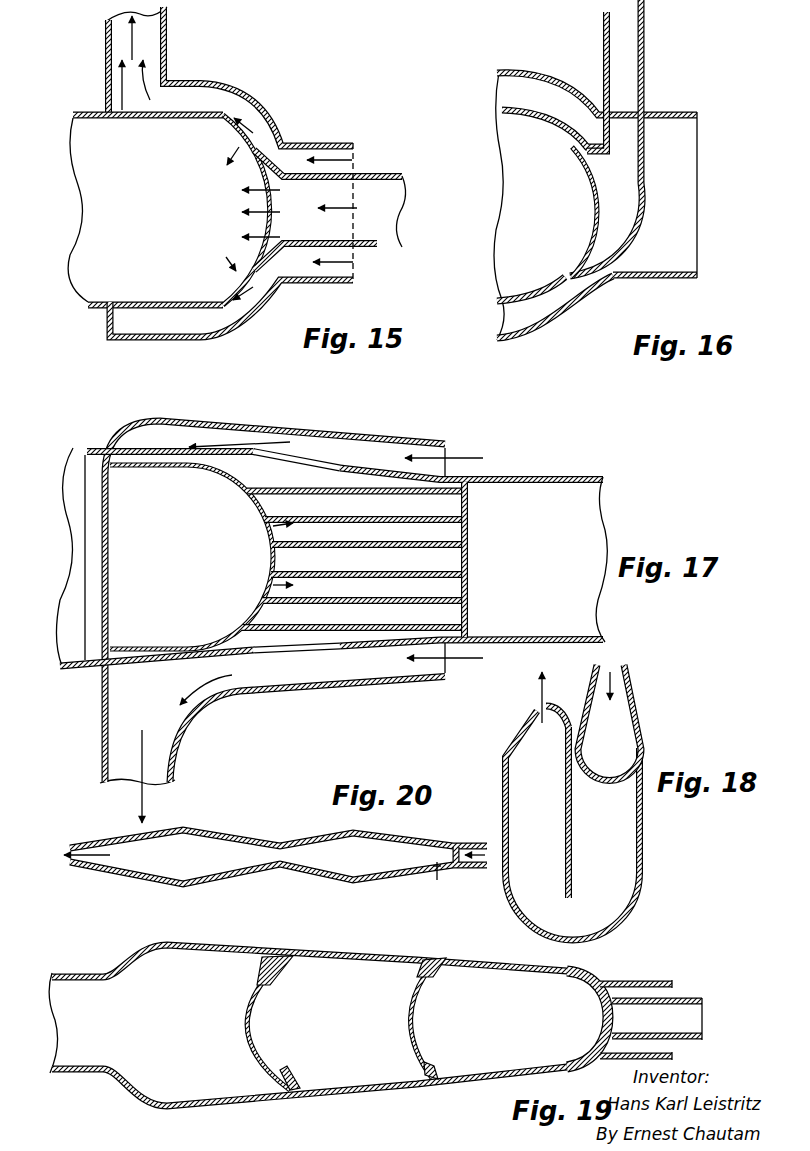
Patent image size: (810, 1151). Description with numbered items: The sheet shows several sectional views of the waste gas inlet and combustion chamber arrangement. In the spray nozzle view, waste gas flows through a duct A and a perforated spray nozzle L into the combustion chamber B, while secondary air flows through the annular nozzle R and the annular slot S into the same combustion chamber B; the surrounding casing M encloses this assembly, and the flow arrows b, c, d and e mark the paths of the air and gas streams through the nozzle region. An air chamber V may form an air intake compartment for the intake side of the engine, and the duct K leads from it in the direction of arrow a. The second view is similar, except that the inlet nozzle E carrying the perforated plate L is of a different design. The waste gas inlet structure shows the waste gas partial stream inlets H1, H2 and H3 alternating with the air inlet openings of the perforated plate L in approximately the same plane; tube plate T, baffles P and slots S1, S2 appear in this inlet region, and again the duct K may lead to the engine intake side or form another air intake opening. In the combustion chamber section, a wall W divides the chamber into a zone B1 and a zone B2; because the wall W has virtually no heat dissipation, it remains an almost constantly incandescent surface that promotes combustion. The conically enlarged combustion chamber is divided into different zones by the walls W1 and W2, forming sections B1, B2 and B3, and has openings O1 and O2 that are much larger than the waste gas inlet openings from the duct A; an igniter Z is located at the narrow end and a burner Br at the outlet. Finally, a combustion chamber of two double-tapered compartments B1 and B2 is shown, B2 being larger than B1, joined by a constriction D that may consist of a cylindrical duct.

In FIG. 15, the duct A is at (393, 183).
In FIG. 16, the duct A is at (633, 48).
In FIG. 17, the duct A is at (580, 508).
In FIG. 18, the duct A is at (618, 720).
In FIG. 19, the duct A is at (633, 1010).
In FIG. 15, the combustion chamber B is at (150, 190).
In FIG. 16, the combustion chamber B is at (507, 273).
In FIG. 17, the combustion chamber B is at (118, 477).
In FIG. 18, the zone B1 is at (622, 873).
In FIG. 20, the zone B1 is at (340, 868).
In FIG. 19, the zone B1 is at (482, 1075).
In FIG. 18, the zone B2 is at (513, 783).
In FIG. 20, the zone B2 is at (130, 868).
In FIG. 19, the zone B2 is at (327, 1075).
In FIG. 19, the third chamber section B3 is at (138, 1080).
In FIG. 20, the burner Br is at (455, 843).
In FIG. 18, the constriction D is at (538, 912).
In FIG. 20, the constriction D is at (286, 838).
In FIG. 16, the inlet nozzle E is at (613, 243).
In FIG. 17, the waste gas partial stream inlet H1 is at (253, 503).
In FIG. 17, the waste gas partial stream inlet H2 is at (280, 562).
In FIG. 17, the waste gas partial stream inlet H3 is at (267, 615).
In FIG. 15, the duct K is at (150, 33).
In FIG. 17, the duct K is at (178, 752).
In FIG. 15, the perforated spray nozzle L is at (248, 229).
In FIG. 16, the perforated spray nozzle L is at (588, 188).
In FIG. 17, the perforated spray nozzle L is at (250, 530).
In FIG. 15, the jacket casing M is at (240, 92).
In FIG. 16, the jacket casing M is at (522, 70).
In FIG. 17, the jacket casing M is at (293, 430).
In FIG. 19, the opening O1 is at (418, 1027).
In FIG. 19, the opening O2 is at (247, 1020).
In FIG. 17, the baffle P is at (240, 470).
In FIG. 15, the annular nozzle R is at (345, 156).
In FIG. 16, the annular nozzle R is at (698, 182).
In FIG. 17, the annular nozzle R is at (443, 456).
In FIG. 19, the annular nozzle R is at (623, 1042).
In FIG. 15, the annular slot S is at (250, 148).
In FIG. 16, the annular slot S is at (563, 270).
In FIG. 17, the annular slot S is at (191, 557).
In FIG. 17, the first slot S1 is at (280, 467).
In FIG. 17, the second slot S2 is at (290, 655).
In FIG. 17, the tube plate T is at (465, 530).
In FIG. 15, the air chamber V is at (177, 328).
In FIG. 16, the air chamber V is at (542, 318).
In FIG. 17, the air chamber V is at (143, 442).
In FIG. 15, the wall W is at (110, 118).
In FIG. 18, the wall W is at (573, 827).
In FIG. 19, the wall W1 is at (415, 968).
In FIG. 19, the wall W2 is at (268, 968).
In FIG. 20, the igniter Z is at (436, 873).
In FIG. 19, the igniter Z is at (72, 987).
In FIG. 15, the arrow a is at (137, 33).
In FIG. 18, the arrow a is at (611, 660).
In FIG. 15, the secondary flow direction b is at (360, 160).
In FIG. 18, the secondary flow direction b is at (544, 697).
In FIG. 15, the jacket flow direction c is at (240, 138).
In FIG. 15, the passage flow direction d is at (251, 152).
In FIG. 15, the main flow direction e is at (410, 210).